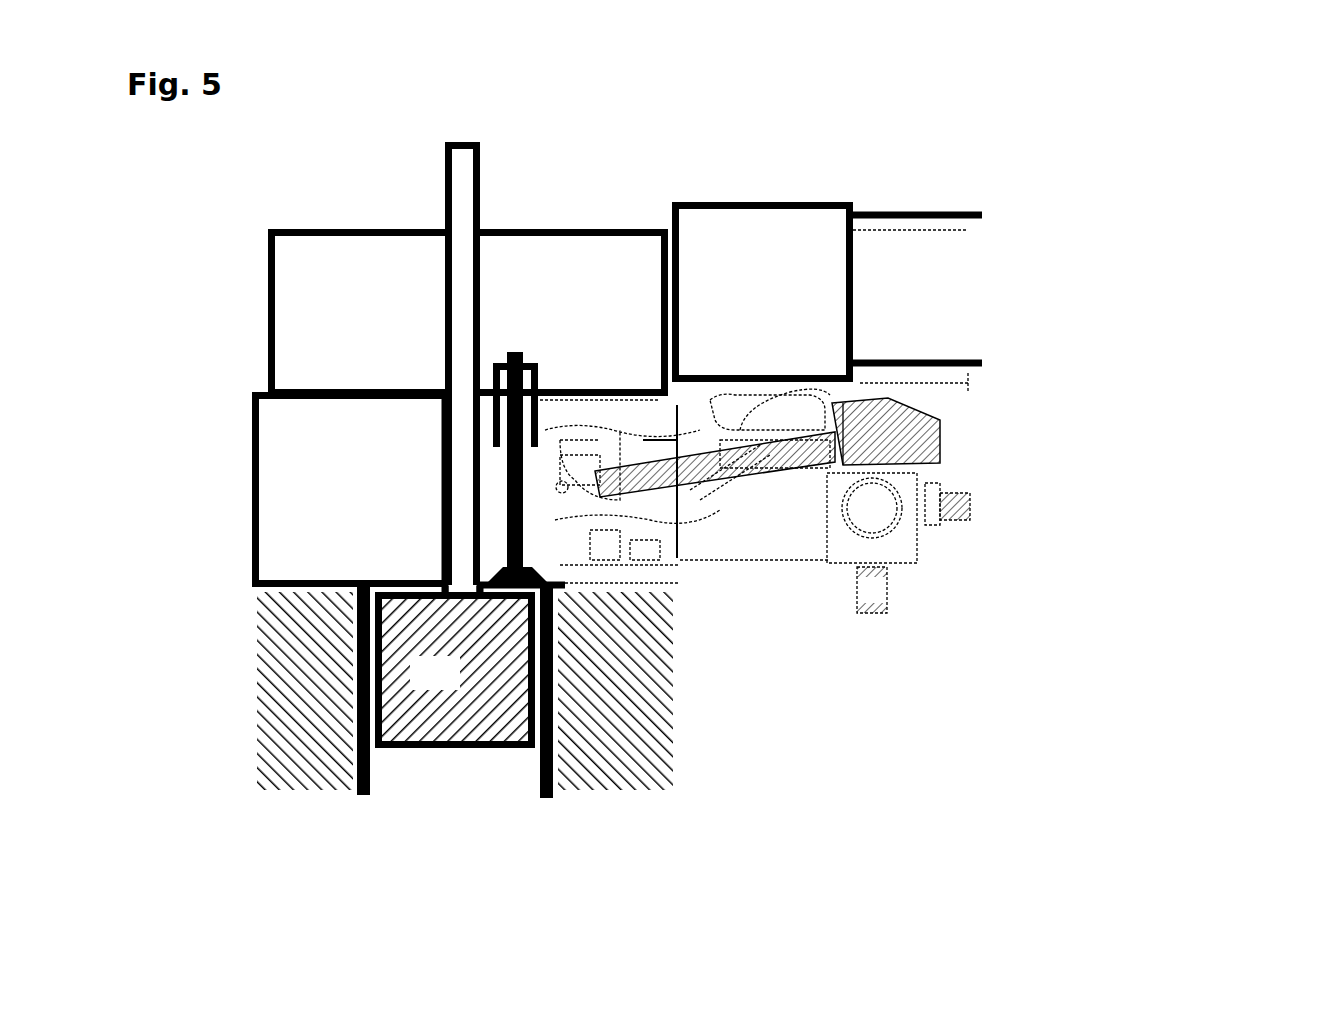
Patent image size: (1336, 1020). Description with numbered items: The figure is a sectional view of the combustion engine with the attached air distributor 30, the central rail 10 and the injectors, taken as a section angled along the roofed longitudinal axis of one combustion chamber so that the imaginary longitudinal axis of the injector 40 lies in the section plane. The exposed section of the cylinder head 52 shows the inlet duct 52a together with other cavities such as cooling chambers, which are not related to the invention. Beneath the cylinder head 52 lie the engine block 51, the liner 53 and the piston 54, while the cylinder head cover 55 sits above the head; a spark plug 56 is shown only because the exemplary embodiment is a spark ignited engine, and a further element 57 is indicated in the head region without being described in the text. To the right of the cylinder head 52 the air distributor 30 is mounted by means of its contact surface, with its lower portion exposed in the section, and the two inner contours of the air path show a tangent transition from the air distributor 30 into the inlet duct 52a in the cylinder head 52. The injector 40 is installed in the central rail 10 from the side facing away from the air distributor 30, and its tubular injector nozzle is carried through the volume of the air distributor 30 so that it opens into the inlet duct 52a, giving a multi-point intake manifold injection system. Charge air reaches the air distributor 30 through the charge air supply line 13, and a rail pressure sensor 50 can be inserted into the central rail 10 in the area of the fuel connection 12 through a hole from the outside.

The central rail 10 is at (860, 412).
The fuel connection 12 is at (907, 618).
The charge air supply line 13 is at (916, 304).
The air distributor 30 is at (752, 295).
The injector 40 is at (961, 437).
The rail pressure sensor 50 is at (872, 523).
The engine block 51 is at (278, 690).
The cylinder head 52 is at (340, 504).
The inlet duct 52a is at (562, 487).
The liner 53 is at (388, 763).
The piston 54 is at (422, 684).
The cylinder head cover 55 is at (342, 322).
The spark plug 56 is at (459, 194).
The pin 57 is at (515, 329).